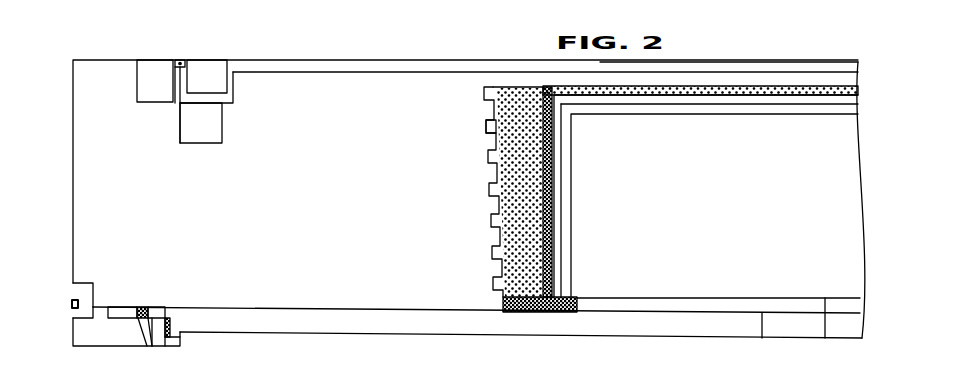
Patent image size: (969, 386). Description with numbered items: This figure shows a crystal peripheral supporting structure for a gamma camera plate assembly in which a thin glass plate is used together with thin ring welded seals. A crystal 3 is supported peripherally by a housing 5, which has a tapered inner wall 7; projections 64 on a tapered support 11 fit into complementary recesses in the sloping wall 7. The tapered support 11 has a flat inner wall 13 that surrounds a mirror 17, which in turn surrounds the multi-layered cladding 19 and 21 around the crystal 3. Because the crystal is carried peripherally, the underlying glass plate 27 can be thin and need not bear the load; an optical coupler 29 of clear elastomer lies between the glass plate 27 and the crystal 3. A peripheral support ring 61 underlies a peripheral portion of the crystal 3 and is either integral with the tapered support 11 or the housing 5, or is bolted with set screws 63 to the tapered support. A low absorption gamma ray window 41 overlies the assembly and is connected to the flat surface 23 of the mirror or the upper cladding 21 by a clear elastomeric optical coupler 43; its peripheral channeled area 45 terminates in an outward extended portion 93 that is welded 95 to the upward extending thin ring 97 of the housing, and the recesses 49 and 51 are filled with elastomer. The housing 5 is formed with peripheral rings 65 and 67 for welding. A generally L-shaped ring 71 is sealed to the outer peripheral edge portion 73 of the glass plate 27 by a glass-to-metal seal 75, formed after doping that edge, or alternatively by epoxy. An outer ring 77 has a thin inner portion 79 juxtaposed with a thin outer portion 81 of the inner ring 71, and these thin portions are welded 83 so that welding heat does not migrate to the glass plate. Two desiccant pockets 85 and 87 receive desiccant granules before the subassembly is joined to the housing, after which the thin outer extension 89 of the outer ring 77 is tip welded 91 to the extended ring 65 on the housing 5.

The crystal 3 is at (825, 338).
The housing 5 is at (72, 163).
The tapered inner wall 7 is at (500, 170).
The tapered support 11 is at (511, 88).
The flat inner wall 13 is at (545, 102).
The mirror 17 is at (555, 140).
The cladding 19 is at (567, 170).
The upper cladding 21 is at (572, 215).
The flat surface 23 is at (778, 98).
The thin glass plate 27 is at (510, 339).
The optical coupler 29 is at (762, 338).
The gamma ray window 41 is at (790, 62).
The elastomeric optical coupler 43 is at (712, 72).
The peripheral channeled area 45 is at (233, 89).
The recess 49 is at (158, 59).
The recess 51 is at (210, 66).
The peripheral support ring 61 is at (574, 314).
The set screws 63 is at (537, 314).
The projections 64 is at (493, 121).
The peripheral ring 65 is at (84, 299).
The peripheral ring 67 is at (174, 101).
The L-shaped ring 71 is at (166, 350).
The outer peripheral edge portion 73 is at (173, 332).
The glass-to-metal seal 75 is at (181, 337).
The outer ring 77 is at (80, 347).
The thin inner portion 79 is at (137, 347).
The thin outer portion 81 is at (154, 350).
The weld 83 is at (143, 309).
The desiccant pocket 85 is at (163, 309).
The desiccant pocket 87 is at (123, 307).
The thin outer extension 89 is at (78, 312).
The tip weld 91 is at (71, 303).
The outward extended portion 93 is at (185, 95).
The weld 95 is at (181, 61).
The upward extending thin ring 97 is at (205, 131).